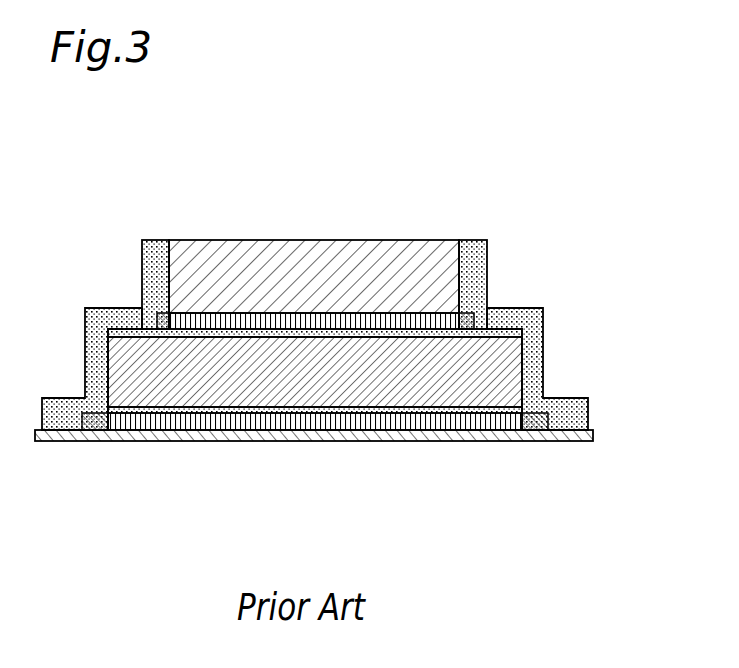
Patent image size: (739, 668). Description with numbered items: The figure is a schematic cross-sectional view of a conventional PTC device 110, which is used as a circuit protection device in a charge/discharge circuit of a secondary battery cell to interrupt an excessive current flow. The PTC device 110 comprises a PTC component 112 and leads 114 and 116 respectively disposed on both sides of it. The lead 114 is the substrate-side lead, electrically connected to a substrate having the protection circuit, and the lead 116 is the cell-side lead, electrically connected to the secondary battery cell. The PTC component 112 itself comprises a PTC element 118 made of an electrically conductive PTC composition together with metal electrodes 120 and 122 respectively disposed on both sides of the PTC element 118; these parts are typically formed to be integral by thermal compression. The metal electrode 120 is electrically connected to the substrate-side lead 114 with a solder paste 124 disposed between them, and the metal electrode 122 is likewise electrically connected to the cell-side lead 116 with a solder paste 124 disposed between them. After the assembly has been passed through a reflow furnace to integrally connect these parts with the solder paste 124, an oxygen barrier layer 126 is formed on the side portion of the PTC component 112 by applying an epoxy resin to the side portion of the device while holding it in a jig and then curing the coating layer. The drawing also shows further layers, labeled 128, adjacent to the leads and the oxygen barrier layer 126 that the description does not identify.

The PTC device 110 is at (492, 208).
The PTC component 112 is at (413, 329).
The lead 114 is at (363, 432).
The lead 116 is at (315, 257).
The PTC element 118 is at (522, 367).
The metal electrode 120 is at (377, 379).
The metal electrode 122 is at (510, 330).
The solder paste 124 is at (203, 326).
The oxygen barrier layer 126 is at (97, 315).
The adhesive layer 128 is at (160, 314).